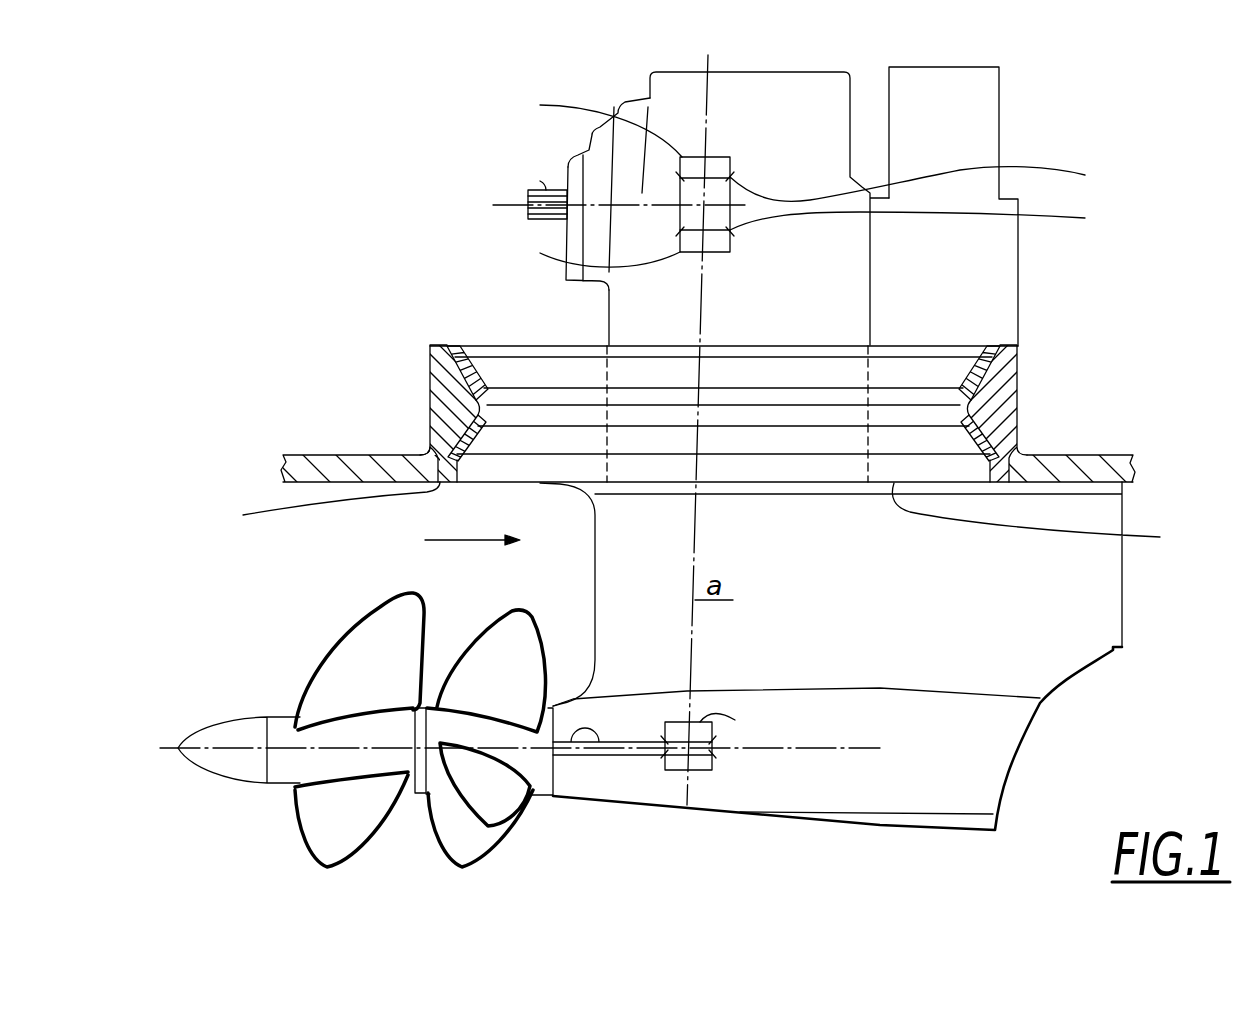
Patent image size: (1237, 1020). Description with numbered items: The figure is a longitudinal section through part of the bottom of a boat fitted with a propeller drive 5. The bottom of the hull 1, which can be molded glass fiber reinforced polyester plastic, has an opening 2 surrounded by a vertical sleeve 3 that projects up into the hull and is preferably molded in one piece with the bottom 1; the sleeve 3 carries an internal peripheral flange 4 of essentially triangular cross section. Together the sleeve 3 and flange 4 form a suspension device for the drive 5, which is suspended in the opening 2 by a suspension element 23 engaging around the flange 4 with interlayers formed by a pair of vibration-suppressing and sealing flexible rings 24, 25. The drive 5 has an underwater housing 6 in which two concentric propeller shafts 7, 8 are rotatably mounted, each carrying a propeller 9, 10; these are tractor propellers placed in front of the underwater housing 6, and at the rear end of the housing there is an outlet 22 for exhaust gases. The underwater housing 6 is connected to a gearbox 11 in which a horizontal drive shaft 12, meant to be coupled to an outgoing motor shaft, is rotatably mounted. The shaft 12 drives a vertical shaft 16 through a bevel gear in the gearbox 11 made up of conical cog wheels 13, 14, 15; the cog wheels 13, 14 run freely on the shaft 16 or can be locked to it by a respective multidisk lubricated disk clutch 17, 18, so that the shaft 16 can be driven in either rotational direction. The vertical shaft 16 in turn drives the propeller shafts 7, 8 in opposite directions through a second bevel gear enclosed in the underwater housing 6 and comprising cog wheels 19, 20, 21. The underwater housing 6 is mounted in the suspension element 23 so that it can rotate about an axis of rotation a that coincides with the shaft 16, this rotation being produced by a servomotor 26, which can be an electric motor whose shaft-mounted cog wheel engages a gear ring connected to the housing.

The bottom of hull 1 is at (340, 483).
The opening 2 is at (327, 506).
The sleeve 3 is at (428, 383).
The internal peripheral flange 4 is at (428, 412).
The propeller drive 5 is at (457, 541).
The underwater housing 6 is at (592, 603).
The propeller shaft 7 is at (595, 737).
The propeller shaft 8 is at (613, 755).
The propeller 9 is at (507, 615).
The propeller 10 is at (347, 627).
The gearbox 11 is at (795, 72).
The horizontal drive shaft 12 is at (540, 181).
The conical cog wheel 13 is at (1085, 175).
The conical cog wheel 14 is at (1085, 218).
The conical cog wheel 15 is at (680, 187).
The vertical shaft 16 is at (697, 317).
The multidisk lubricated disk clutch 17 is at (540, 105).
The multidisk lubricated disk clutch 18 is at (540, 253).
The cog wheel 19 is at (735, 720).
The cog wheel 20 is at (650, 742).
The cog wheel 21 is at (712, 767).
The outlet 22 is at (1023, 735).
The suspension element 23 is at (886, 594).
The flexible ring 24 is at (988, 420).
The flexible ring 25 is at (1017, 443).
The servomotor 26 is at (945, 67).